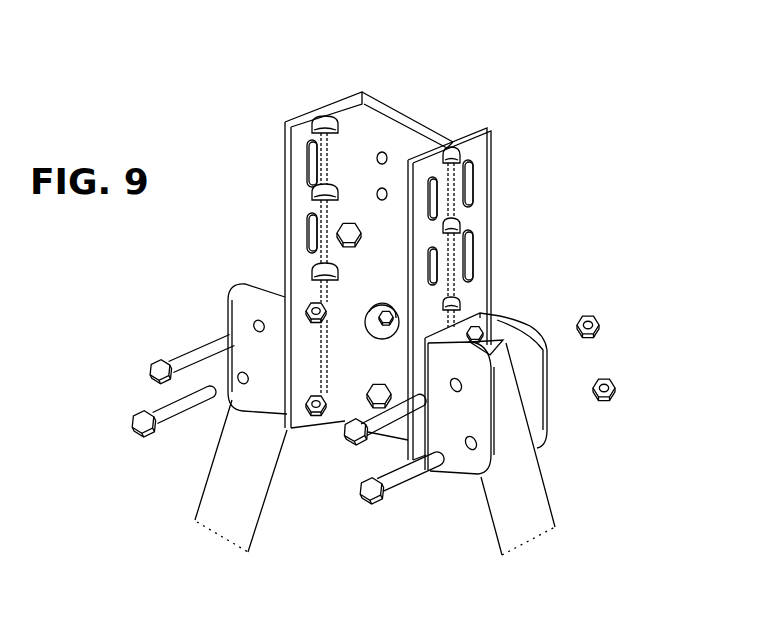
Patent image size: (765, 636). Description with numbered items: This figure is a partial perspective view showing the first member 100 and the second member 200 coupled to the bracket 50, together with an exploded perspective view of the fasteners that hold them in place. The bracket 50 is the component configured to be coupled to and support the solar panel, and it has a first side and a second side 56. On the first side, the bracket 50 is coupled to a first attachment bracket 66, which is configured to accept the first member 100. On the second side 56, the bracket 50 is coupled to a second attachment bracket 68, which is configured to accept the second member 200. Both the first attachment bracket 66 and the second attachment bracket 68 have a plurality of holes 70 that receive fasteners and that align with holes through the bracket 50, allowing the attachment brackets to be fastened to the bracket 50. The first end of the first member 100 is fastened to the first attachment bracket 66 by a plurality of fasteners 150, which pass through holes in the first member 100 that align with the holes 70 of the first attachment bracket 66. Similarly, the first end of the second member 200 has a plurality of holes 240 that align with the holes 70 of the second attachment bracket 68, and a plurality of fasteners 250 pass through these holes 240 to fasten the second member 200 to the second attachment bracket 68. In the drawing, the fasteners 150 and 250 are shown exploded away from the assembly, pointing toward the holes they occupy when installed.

The bracket 50 is at (436, 82).
The second side 56 is at (478, 216).
The first attachment bracket 66 is at (243, 302).
The plurality of holes 70 is at (242, 375).
The plurality of fasteners 150 is at (172, 406).
The first member 100 is at (217, 507).
The plurality of fasteners 250 is at (402, 478).
The plurality of holes 240 is at (472, 448).
The second attachment bracket 68 is at (500, 330).
The second member 200 is at (543, 510).